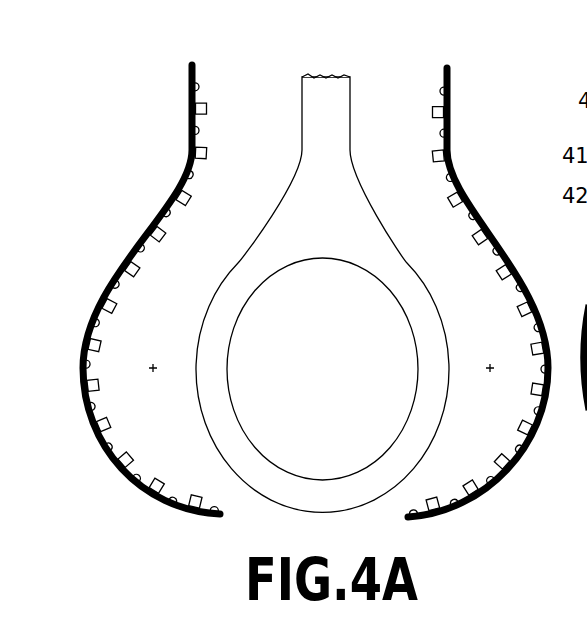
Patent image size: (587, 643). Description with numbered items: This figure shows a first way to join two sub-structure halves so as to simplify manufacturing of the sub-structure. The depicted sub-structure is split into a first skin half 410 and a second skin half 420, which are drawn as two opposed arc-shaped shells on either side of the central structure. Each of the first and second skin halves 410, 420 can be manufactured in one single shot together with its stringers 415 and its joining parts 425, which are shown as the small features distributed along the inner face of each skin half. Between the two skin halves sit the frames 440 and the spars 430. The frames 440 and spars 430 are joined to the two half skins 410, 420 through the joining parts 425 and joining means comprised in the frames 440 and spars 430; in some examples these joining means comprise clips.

The first skin half 410 is at (188, 108).
The stringers 415 is at (178, 190).
The joining parts 425 is at (135, 242).
The second skin half 420 is at (450, 138).
The spars 430 is at (352, 100).
The frames 440 is at (410, 457).